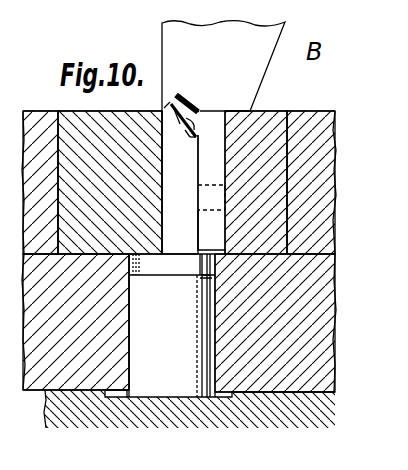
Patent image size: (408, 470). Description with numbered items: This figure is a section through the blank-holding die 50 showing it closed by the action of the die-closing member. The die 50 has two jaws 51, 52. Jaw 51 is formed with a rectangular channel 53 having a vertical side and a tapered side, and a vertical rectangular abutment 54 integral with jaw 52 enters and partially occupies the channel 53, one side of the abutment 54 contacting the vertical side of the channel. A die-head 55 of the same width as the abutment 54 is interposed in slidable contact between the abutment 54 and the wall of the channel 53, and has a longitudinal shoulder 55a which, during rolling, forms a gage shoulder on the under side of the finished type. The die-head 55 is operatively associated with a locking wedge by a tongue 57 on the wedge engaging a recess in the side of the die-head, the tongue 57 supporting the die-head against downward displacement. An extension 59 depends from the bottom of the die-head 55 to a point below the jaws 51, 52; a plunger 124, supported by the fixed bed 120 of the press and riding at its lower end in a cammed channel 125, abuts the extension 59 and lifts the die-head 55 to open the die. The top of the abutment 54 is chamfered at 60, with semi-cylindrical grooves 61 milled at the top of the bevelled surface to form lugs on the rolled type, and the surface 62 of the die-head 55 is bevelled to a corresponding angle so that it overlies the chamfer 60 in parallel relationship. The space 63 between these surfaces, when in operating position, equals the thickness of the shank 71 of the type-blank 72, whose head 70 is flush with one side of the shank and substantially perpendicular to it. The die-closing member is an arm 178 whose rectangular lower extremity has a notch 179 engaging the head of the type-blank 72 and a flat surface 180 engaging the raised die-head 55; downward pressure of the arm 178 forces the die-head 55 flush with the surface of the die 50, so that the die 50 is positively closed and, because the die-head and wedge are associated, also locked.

The blank-holding die 50 is at (289, 110).
The jaw 51 is at (256, 182).
The jaw 52 is at (178, 254).
The rectangular channel 53 is at (208, 278).
The abutment 54 is at (180, 182).
The die-head 55 is at (212, 192).
The longitudinal shoulder 55a is at (207, 101).
The tongue 57 is at (191, 202).
The extension 59 is at (201, 266).
The chamfer 60 is at (169, 135).
The semi-cylindrical groove 61 is at (168, 123).
The bevelled surface 62 is at (196, 127).
The space 63 is at (195, 152).
The head 70 is at (176, 96).
The shank 71 is at (182, 143).
The type-blank 72 is at (164, 110).
The fixed bed 120 is at (299, 413).
The plunger 124 is at (172, 325).
The cammed channel 125 is at (112, 398).
The arm 178 is at (223, 66).
The notch 179 is at (179, 97).
The flat surface 180 is at (212, 111).